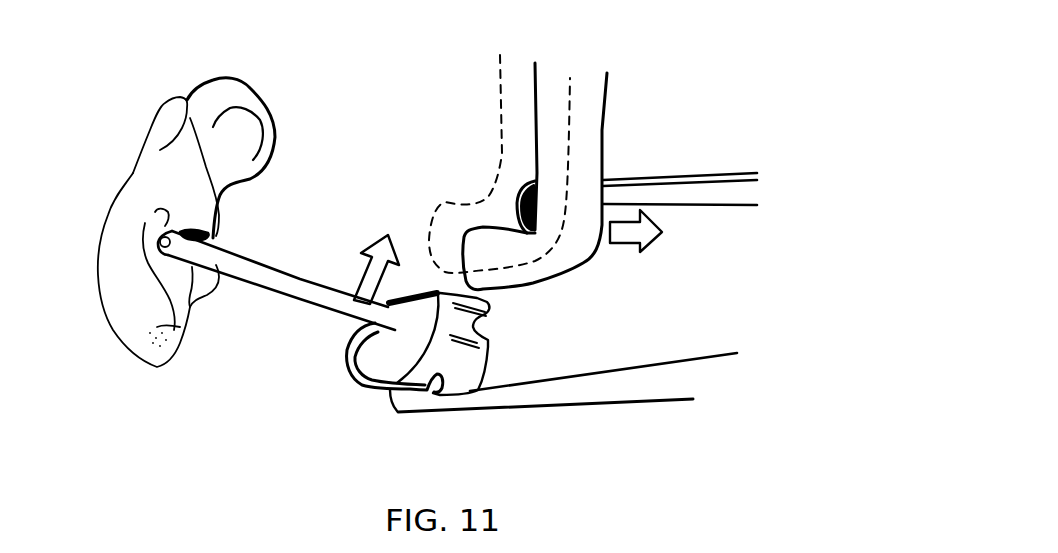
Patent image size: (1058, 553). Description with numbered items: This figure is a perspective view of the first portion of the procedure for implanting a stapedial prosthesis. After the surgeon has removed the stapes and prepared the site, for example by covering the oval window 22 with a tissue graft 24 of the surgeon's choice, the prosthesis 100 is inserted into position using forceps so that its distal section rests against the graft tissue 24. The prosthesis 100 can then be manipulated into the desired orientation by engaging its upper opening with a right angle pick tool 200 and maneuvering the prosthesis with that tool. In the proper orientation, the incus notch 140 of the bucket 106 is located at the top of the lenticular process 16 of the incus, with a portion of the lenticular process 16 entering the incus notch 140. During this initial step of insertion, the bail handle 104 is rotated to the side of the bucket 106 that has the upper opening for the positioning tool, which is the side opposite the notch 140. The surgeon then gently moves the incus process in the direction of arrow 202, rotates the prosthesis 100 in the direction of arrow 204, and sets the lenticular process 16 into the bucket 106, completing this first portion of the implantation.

The lenticular process 16 is at (555, 268).
The oval window 22 is at (137, 177).
The tissue graft 24 is at (153, 277).
The prosthesis 100 is at (400, 337).
The bail handle 104 is at (357, 380).
The bucket 106 is at (427, 290).
The incus notch 140 is at (478, 326).
The right angle pick tool 200 is at (707, 190).
The arrow 202 is at (652, 237).
The arrow 204 is at (357, 243).